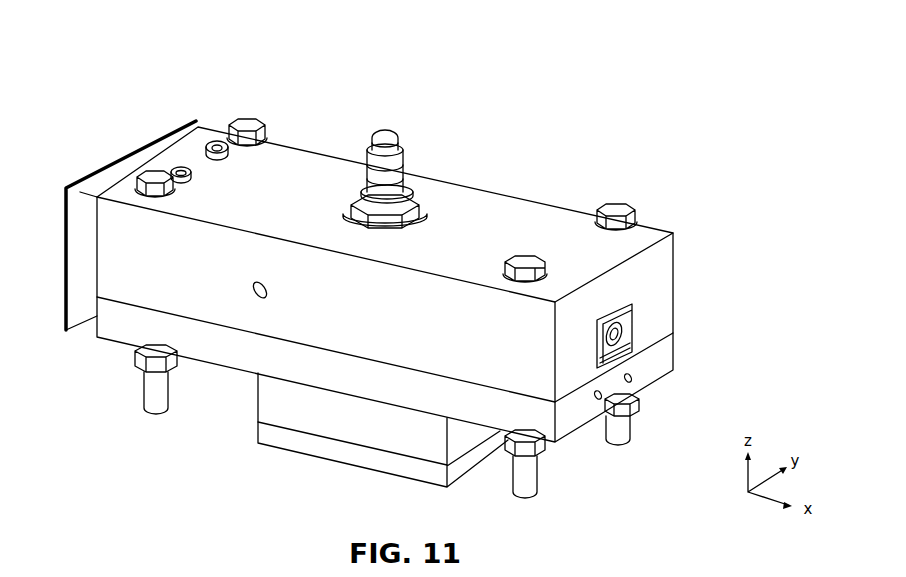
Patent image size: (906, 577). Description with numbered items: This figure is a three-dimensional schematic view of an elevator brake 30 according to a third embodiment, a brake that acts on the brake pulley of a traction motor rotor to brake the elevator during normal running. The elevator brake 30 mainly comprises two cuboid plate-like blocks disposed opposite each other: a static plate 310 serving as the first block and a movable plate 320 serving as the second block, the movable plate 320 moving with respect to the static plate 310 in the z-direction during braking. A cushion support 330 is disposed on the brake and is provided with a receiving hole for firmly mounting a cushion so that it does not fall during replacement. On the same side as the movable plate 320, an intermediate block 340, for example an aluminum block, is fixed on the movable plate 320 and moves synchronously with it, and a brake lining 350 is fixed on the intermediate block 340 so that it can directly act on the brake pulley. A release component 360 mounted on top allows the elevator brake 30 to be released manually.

The elevator brake 30 is at (121, 65).
The static plate 310 is at (662, 279).
The movable plate 320 is at (662, 349).
The cushion support 330 is at (637, 336).
The intermediate block 340 is at (277, 402).
The brake lining 350 is at (385, 456).
The release component 360 is at (417, 173).